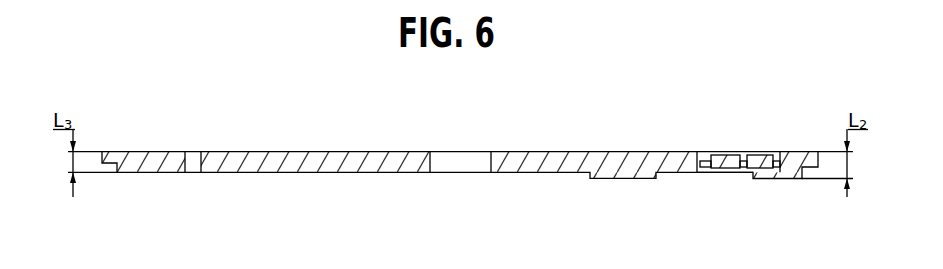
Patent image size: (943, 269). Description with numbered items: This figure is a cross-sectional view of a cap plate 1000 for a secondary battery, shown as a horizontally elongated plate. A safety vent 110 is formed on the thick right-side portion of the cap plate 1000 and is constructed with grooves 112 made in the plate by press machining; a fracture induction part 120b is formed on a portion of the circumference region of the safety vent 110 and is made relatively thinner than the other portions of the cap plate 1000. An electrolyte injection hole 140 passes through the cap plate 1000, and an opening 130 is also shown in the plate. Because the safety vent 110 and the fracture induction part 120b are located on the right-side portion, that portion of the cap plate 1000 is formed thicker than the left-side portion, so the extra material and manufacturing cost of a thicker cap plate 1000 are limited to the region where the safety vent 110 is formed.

The cap plate 1000 is at (286, 158).
The groove 130 is at (432, 158).
The electrolyte injection hole 140 is at (195, 172).
The safety vent 110 is at (759, 143).
The grooves 112 is at (711, 152).
The fracture induction part 120b is at (702, 173).